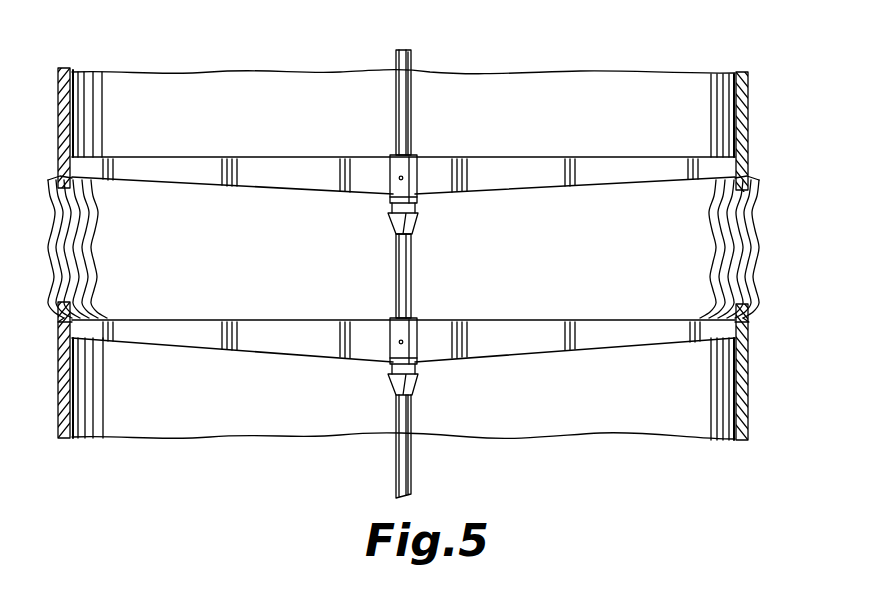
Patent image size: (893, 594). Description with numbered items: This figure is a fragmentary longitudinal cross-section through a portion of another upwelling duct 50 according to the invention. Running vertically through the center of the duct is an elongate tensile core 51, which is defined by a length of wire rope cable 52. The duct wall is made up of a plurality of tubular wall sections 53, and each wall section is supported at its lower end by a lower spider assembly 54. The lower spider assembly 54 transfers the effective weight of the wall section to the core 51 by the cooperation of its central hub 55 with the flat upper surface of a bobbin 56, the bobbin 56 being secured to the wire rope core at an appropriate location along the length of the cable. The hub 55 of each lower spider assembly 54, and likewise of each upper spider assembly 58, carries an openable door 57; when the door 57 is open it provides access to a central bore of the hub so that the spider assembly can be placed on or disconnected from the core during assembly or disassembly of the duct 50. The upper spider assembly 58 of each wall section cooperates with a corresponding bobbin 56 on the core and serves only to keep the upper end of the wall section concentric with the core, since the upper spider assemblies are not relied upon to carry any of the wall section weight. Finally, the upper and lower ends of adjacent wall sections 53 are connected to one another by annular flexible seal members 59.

The upwelling duct 50 is at (483, 56).
The elongate tensile core 51 is at (394, 63).
The wire rope cable 52 is at (412, 474).
The tubular wall section 53 is at (752, 138).
The lower spider assembly 54 is at (592, 128).
The central hub 55 is at (418, 165).
The bobbin 56 is at (418, 224).
The openable door 57 is at (401, 175).
The upper spider assembly 58 is at (540, 319).
The annular flexible seal member 59 is at (758, 250).